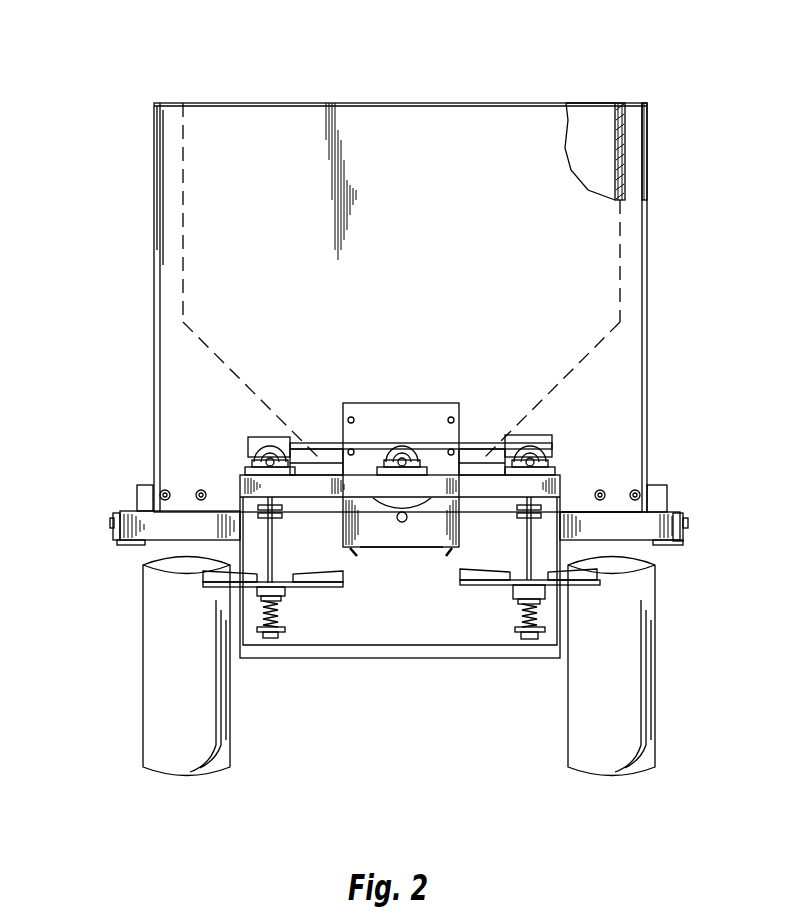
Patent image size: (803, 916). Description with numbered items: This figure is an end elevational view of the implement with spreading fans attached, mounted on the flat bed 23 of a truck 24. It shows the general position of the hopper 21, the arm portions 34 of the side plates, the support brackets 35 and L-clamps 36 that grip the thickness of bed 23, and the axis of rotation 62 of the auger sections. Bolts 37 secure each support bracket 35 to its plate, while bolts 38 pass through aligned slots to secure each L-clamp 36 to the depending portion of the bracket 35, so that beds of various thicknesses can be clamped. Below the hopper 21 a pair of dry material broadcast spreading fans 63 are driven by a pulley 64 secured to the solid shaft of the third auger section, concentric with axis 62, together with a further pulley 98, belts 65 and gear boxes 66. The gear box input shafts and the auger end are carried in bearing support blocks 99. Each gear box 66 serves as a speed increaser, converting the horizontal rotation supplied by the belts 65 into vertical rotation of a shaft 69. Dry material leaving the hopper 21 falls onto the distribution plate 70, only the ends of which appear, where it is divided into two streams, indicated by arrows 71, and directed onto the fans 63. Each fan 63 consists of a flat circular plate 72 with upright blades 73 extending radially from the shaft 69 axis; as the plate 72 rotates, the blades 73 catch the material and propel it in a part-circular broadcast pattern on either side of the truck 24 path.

The hopper 21 is at (287, 130).
The arm portion 34 is at (168, 103).
The bolt 37 is at (641, 443).
The bed 23 is at (183, 527).
The support bracket 35 is at (676, 512).
The L-clamp 36 is at (672, 546).
The bolt 38 is at (688, 526).
The truck 24 is at (143, 728).
The shaft 69 is at (238, 552).
The pulley 64 is at (402, 450).
The belt 65 is at (312, 448).
The gear box 66 is at (267, 437).
The pulley 98 is at (272, 447).
The bearing support block 99 is at (261, 458).
The axis of rotation 62 is at (397, 473).
The spreading fan 63 is at (285, 597).
The circular plate 72 is at (282, 598).
The blade 73 is at (203, 577).
The distribution plate 70 is at (452, 549).
The arrows 71 is at (342, 559).